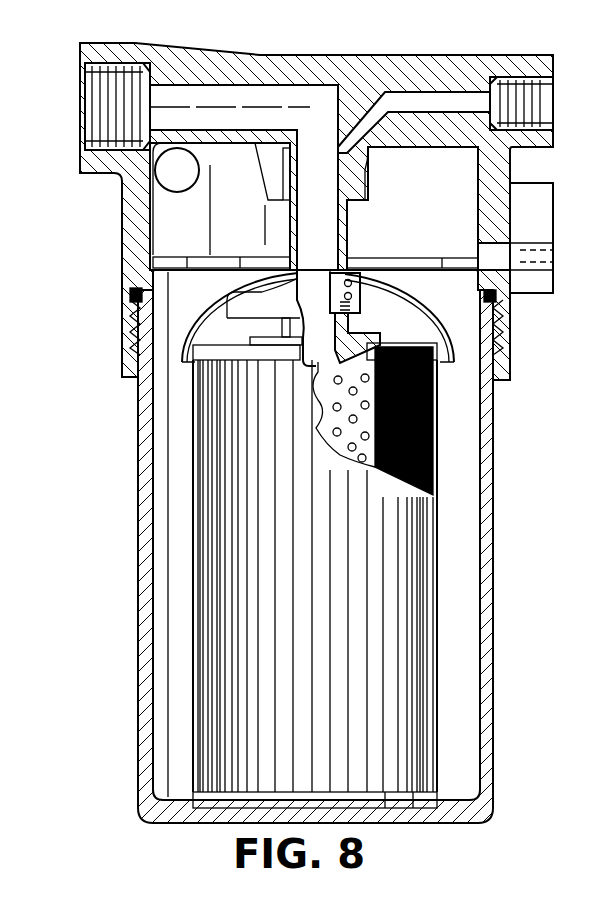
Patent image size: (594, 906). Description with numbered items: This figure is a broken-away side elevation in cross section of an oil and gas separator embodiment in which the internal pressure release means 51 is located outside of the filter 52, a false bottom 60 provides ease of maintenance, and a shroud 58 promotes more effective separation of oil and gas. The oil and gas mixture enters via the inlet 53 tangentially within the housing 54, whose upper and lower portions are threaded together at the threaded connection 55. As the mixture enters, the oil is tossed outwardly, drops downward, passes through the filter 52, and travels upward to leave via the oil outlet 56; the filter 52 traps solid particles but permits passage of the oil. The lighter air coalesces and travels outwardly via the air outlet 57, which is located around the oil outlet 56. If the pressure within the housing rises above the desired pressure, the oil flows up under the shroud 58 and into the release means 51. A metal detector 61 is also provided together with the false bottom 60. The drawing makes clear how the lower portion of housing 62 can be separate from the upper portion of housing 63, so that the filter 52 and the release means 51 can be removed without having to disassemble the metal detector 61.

The internal pressure release means 51 is at (375, 278).
The filter 52 is at (420, 528).
The inlet 53 is at (183, 176).
The housing 54 is at (120, 234).
The threaded connection 55 is at (503, 334).
The oil outlet 56 is at (158, 114).
The air outlet 57 is at (483, 102).
The shroud 58 is at (412, 290).
The false bottom 60 is at (178, 256).
The metal detector 61 is at (553, 250).
The lower portion of housing 62 is at (493, 480).
The upper portion of housing 63 is at (113, 263).